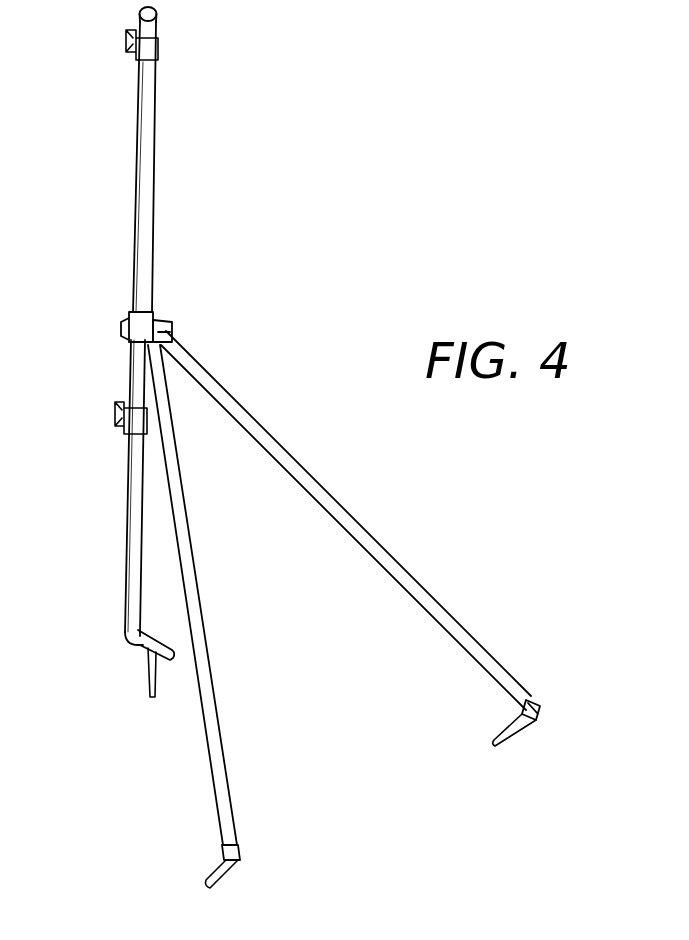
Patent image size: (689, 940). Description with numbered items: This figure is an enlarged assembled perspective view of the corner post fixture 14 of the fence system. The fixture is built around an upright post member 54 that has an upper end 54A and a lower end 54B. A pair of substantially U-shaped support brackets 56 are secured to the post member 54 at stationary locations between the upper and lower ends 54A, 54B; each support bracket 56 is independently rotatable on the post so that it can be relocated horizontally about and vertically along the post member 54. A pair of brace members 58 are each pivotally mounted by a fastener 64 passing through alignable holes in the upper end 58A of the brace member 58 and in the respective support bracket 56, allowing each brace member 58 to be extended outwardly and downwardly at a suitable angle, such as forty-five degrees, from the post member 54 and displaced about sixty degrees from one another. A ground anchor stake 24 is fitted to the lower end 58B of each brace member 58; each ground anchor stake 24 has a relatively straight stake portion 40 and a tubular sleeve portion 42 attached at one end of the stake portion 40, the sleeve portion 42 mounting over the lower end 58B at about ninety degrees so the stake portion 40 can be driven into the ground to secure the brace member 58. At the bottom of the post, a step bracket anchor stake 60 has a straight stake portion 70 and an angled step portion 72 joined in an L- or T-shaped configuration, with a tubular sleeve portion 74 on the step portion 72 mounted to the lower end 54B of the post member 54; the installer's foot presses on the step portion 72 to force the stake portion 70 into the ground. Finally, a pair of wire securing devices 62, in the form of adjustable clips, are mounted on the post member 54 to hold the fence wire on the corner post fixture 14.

The corner post fixture 14 is at (356, 68).
The ground anchor stake 24 is at (546, 727).
The stake portion 40 is at (512, 738).
The tubular sleeve portion 42 is at (546, 710).
The post member 54 is at (153, 212).
The upper end of post member 54A is at (160, 24).
The lower end of post member 54B is at (128, 628).
The support bracket 56 is at (170, 322).
The brace member 58 is at (355, 545).
The upper end of brace member 58A is at (172, 341).
The lower end of brace member 58B is at (530, 690).
The step bracket anchor stake 60 is at (128, 656).
The wire securing device 62 is at (132, 47).
The fastener 64 is at (172, 336).
The stake portion 70 is at (148, 672).
The angled step portion 72 is at (151, 636).
The tubular sleeve portion 74 is at (122, 636).